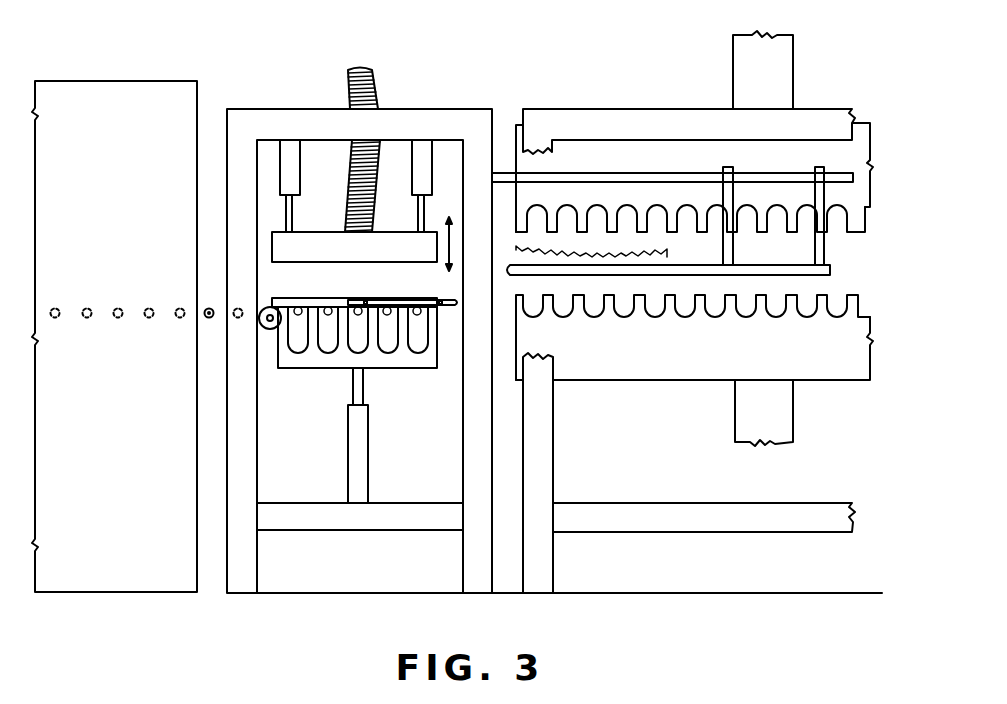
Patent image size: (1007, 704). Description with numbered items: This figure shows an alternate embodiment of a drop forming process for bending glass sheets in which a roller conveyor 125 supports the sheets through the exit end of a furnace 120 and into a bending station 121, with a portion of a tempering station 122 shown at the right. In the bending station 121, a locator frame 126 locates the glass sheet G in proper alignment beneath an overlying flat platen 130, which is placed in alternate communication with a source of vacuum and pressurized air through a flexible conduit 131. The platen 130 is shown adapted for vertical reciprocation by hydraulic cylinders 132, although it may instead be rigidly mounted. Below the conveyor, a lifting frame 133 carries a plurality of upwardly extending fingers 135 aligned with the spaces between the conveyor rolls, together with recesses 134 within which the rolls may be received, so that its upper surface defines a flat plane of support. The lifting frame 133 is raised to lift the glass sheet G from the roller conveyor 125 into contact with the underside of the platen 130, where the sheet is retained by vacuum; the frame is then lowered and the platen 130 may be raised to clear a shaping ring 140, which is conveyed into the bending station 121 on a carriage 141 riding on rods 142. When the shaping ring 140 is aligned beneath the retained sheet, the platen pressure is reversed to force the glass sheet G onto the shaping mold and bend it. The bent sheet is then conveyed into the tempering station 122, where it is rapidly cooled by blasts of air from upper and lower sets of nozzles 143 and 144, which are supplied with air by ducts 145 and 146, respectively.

The furnace 120 is at (152, 82).
The bending station 121 is at (397, 66).
The tempering station 122 is at (634, 76).
The roller conveyor 125 is at (118, 318).
The locator frame 126 is at (456, 299).
The flat platen 130 is at (353, 262).
The flexible conduit 131 is at (347, 176).
The hydraulic cylinders 132 is at (299, 186).
The lifting frame 133 is at (392, 364).
The recesses 134 is at (298, 348).
The fingers 135 is at (402, 330).
The shaping ring 140 is at (612, 260).
The carriage 141 is at (830, 272).
The rods 142 is at (657, 173).
The upper set of nozzles 143 is at (865, 222).
The lower set of nozzles 144 is at (860, 300).
The duct 145 is at (793, 72).
The duct 146 is at (735, 412).
The glass sheet G is at (293, 297).